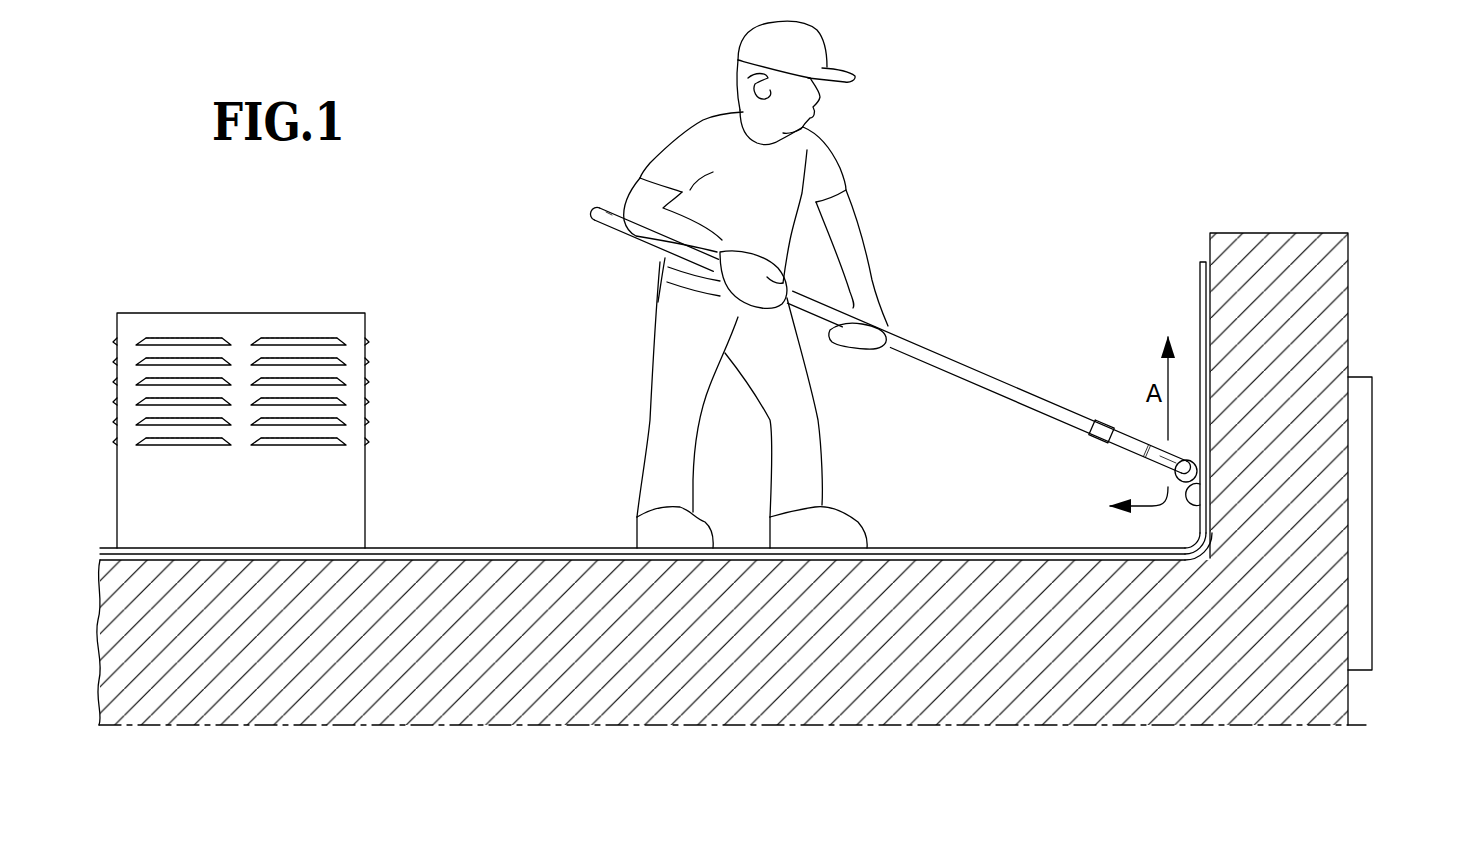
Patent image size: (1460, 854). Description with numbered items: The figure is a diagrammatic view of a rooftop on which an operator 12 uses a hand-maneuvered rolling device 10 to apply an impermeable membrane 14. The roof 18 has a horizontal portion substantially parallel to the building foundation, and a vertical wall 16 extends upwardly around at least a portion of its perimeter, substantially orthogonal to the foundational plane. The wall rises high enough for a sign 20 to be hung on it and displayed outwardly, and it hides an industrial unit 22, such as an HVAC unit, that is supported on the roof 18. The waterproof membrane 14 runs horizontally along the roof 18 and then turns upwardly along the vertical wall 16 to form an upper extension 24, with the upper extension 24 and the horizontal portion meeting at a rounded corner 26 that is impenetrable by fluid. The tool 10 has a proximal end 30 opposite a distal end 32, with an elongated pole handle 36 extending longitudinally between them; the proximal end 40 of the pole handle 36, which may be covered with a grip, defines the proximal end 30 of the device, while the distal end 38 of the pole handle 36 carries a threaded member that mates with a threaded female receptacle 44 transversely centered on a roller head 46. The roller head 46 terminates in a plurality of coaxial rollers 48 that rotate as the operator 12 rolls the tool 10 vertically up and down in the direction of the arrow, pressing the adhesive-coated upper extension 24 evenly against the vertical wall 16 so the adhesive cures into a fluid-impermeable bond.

The rolling device 10 is at (900, 347).
The operator 12 is at (700, 116).
The membrane 14 is at (552, 547).
The vertical wall 16 is at (1208, 243).
The roof 18 is at (472, 557).
The sign 20 is at (1372, 602).
The industrial unit 22 is at (238, 309).
The upper extension 24 is at (1199, 290).
The rounded corner 26 is at (1199, 547).
The proximal end 30 is at (584, 207).
The distal end 32 is at (1207, 465).
The pole handle 36 is at (940, 353).
The distal end of pole handle 38 is at (1084, 430).
The proximal end of pole handle 40 is at (604, 222).
The threaded female receptacle 44 is at (1107, 426).
The roller head 46 is at (1122, 463).
The rollers 48 is at (1200, 508).